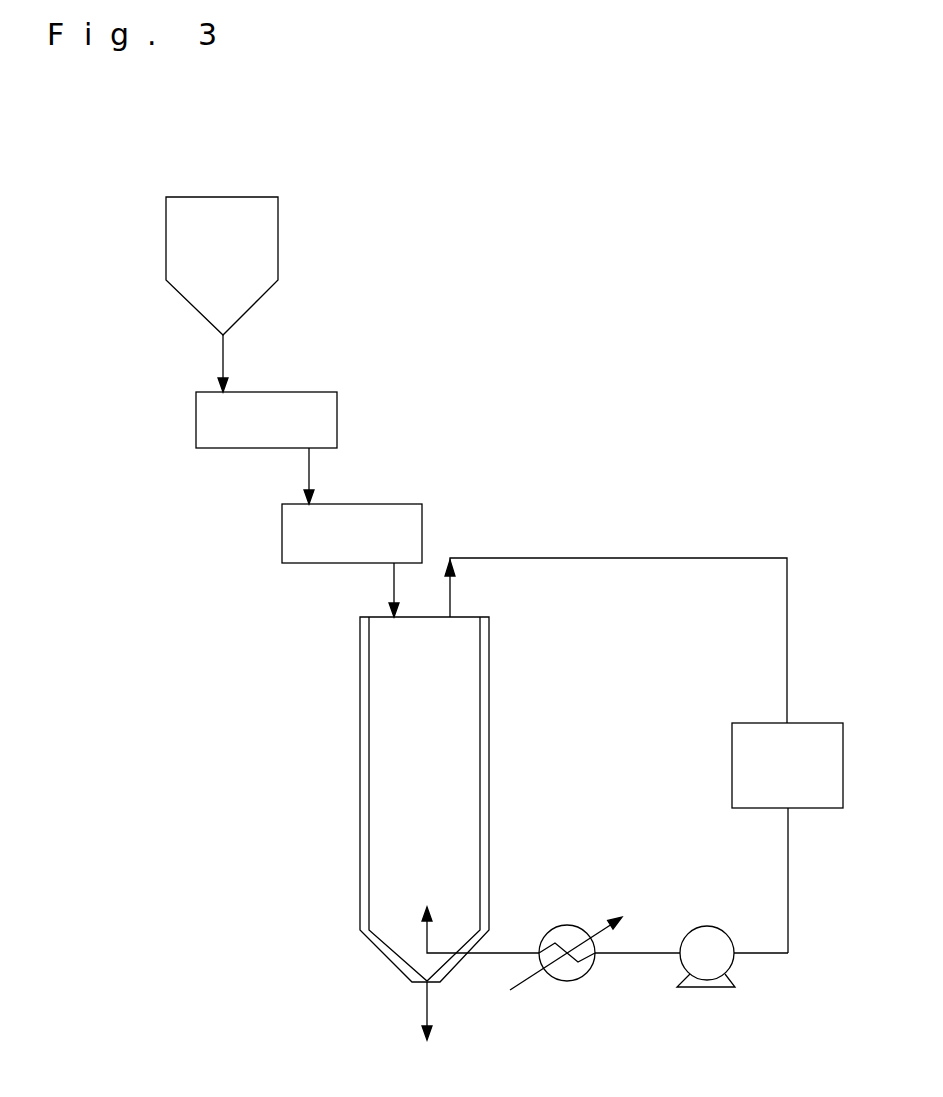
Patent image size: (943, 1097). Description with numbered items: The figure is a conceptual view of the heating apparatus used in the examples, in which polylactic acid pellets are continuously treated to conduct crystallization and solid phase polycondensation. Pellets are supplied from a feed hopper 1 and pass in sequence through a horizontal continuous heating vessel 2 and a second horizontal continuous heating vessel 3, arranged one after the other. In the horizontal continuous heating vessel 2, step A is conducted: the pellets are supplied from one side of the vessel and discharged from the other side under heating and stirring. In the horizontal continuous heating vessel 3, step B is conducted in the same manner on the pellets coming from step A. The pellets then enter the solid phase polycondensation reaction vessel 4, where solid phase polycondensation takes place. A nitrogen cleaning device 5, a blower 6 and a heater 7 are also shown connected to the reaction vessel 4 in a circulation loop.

The feed hopper 1 is at (242, 247).
The horizontal continuous heating vessel 2 is at (267, 413).
The horizontal continuous heating vessel 3 is at (380, 525).
The solid phase polycondensation reaction vessel 4 is at (362, 755).
The nitrogen cleaning device 5 is at (750, 773).
The blower 6 is at (700, 942).
The heater 7 is at (557, 937).